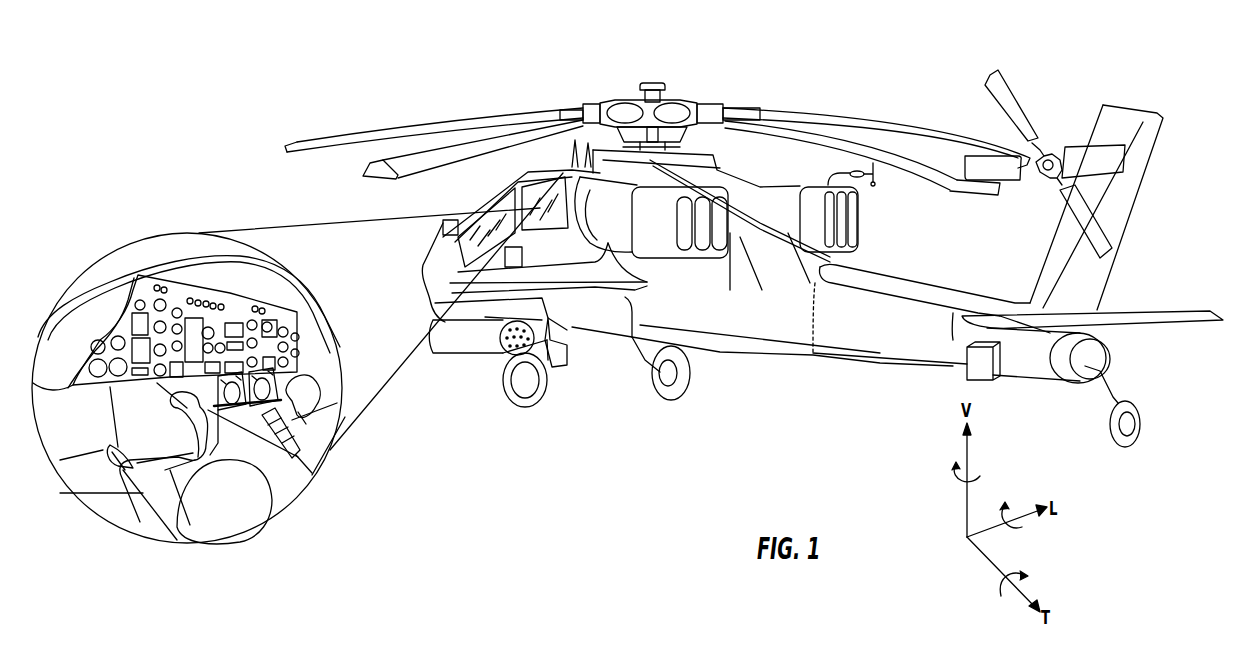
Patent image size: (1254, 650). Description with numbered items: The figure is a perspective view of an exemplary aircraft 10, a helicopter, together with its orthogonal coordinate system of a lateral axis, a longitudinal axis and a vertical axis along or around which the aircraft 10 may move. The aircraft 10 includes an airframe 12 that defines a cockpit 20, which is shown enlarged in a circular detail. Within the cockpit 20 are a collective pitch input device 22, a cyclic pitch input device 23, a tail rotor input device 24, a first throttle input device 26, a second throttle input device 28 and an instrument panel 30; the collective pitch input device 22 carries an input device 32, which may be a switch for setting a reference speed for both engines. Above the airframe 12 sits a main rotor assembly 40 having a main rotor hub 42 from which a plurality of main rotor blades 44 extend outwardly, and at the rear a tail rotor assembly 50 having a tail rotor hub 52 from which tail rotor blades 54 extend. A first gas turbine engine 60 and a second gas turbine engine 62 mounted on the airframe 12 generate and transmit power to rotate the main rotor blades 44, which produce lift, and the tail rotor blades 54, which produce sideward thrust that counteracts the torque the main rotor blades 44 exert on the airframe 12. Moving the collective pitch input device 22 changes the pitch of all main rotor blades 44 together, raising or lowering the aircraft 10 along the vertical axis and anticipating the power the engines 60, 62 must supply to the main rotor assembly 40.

The aircraft 10 is at (687, 273).
The airframe 12 is at (895, 330).
The cockpit 20 is at (164, 241).
The collective pitch input device 22 is at (290, 473).
The cyclic pitch input device 23 is at (173, 410).
The tail rotor input device 24 is at (108, 460).
The first throttle input device 26 is at (255, 420).
The second throttle input device 28 is at (275, 383).
The instrument panel 30 is at (210, 300).
The input device 32 is at (288, 428).
The main rotor assembly 40 is at (625, 66).
The main rotor hub 42 is at (657, 82).
The main rotor blades 44 is at (420, 150).
The tail rotor assembly 50 is at (1055, 143).
The tail rotor hub 52 is at (1040, 180).
The tail rotor blades 54 is at (1013, 100).
The first gas turbine engine 60 is at (613, 208).
The second gas turbine engine 62 is at (790, 194).